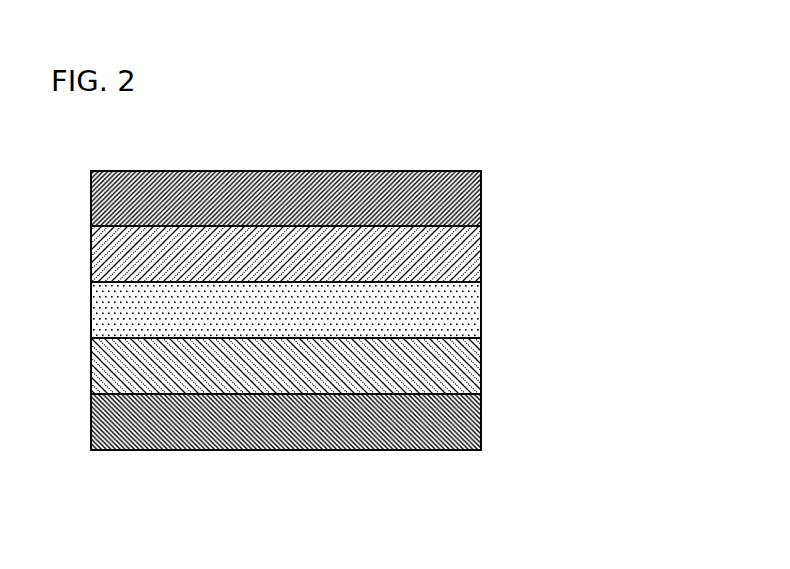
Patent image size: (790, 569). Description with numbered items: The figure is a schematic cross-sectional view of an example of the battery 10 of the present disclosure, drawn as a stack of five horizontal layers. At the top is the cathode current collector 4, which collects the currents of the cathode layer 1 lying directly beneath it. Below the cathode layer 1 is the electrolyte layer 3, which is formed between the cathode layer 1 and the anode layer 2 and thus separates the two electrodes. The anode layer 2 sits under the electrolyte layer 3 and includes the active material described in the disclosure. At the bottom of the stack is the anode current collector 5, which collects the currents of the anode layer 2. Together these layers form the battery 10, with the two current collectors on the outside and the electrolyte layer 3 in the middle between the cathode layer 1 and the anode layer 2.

The battery 10 is at (457, 150).
The cathode current collector 4 is at (461, 190).
The cathode layer 1 is at (458, 245).
The electrolyte layer 3 is at (458, 301).
The anode layer 2 is at (458, 356).
The anode current collector 5 is at (458, 412).